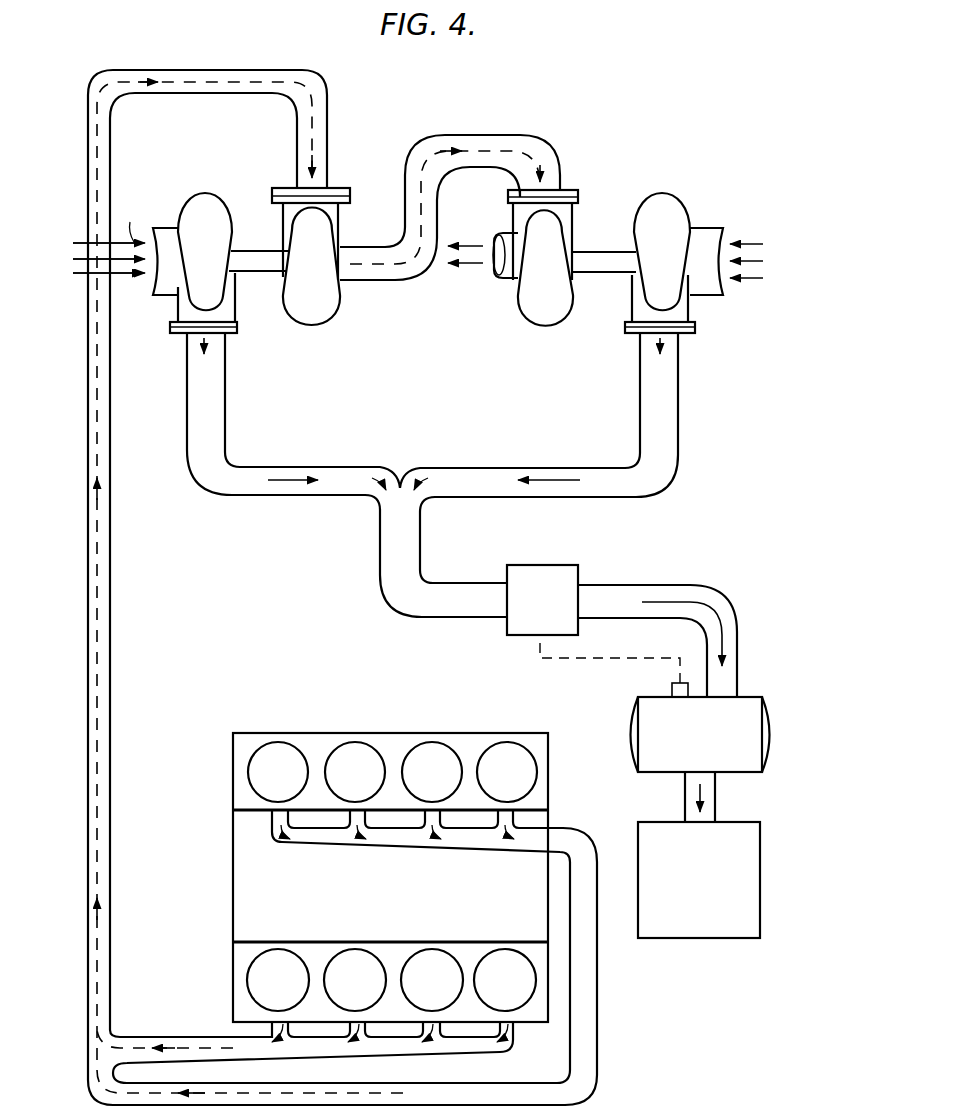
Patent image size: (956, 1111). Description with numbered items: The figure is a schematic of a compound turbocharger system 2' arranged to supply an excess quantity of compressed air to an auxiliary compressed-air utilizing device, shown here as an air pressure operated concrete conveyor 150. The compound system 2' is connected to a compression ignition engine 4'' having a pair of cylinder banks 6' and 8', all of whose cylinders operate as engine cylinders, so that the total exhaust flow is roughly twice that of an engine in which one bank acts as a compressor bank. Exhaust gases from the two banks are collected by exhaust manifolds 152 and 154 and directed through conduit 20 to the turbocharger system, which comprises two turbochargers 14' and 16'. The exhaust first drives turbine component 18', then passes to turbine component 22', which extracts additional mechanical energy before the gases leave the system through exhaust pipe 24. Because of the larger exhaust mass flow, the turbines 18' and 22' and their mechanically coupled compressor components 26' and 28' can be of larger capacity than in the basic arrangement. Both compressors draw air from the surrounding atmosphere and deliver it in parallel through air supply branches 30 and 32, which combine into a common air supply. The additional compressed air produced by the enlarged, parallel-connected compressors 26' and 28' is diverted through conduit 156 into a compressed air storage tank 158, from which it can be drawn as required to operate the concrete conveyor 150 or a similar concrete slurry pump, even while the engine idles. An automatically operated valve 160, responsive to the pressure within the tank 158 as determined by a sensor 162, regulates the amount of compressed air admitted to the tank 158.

The compound turbocharger system 2' is at (491, 196).
The compression ignition engine 4'' is at (416, 872).
The cylinder bank 6' is at (390, 996).
The cylinder bank 8' is at (394, 756).
The turbocharger 14' is at (181, 229).
The turbocharger 16' is at (709, 237).
The turbine component 18' is at (322, 268).
The conduit 20 is at (110, 450).
The turbine component 22' is at (572, 273).
The exhaust pipe 24 is at (505, 279).
The compressor component 26' is at (221, 326).
The compressor component 28' is at (681, 331).
The air supply branch 30 is at (340, 466).
The air supply branch 32 is at (512, 467).
The air pressure operated concrete conveyor 150 is at (760, 893).
The exhaust manifold 152 is at (472, 843).
The exhaust manifold 154 is at (452, 1047).
The conduit 156 is at (700, 584).
The compressed air storage tank 158 is at (750, 697).
The automatically operated valve 160 is at (578, 574).
The sensor 162 is at (672, 688).